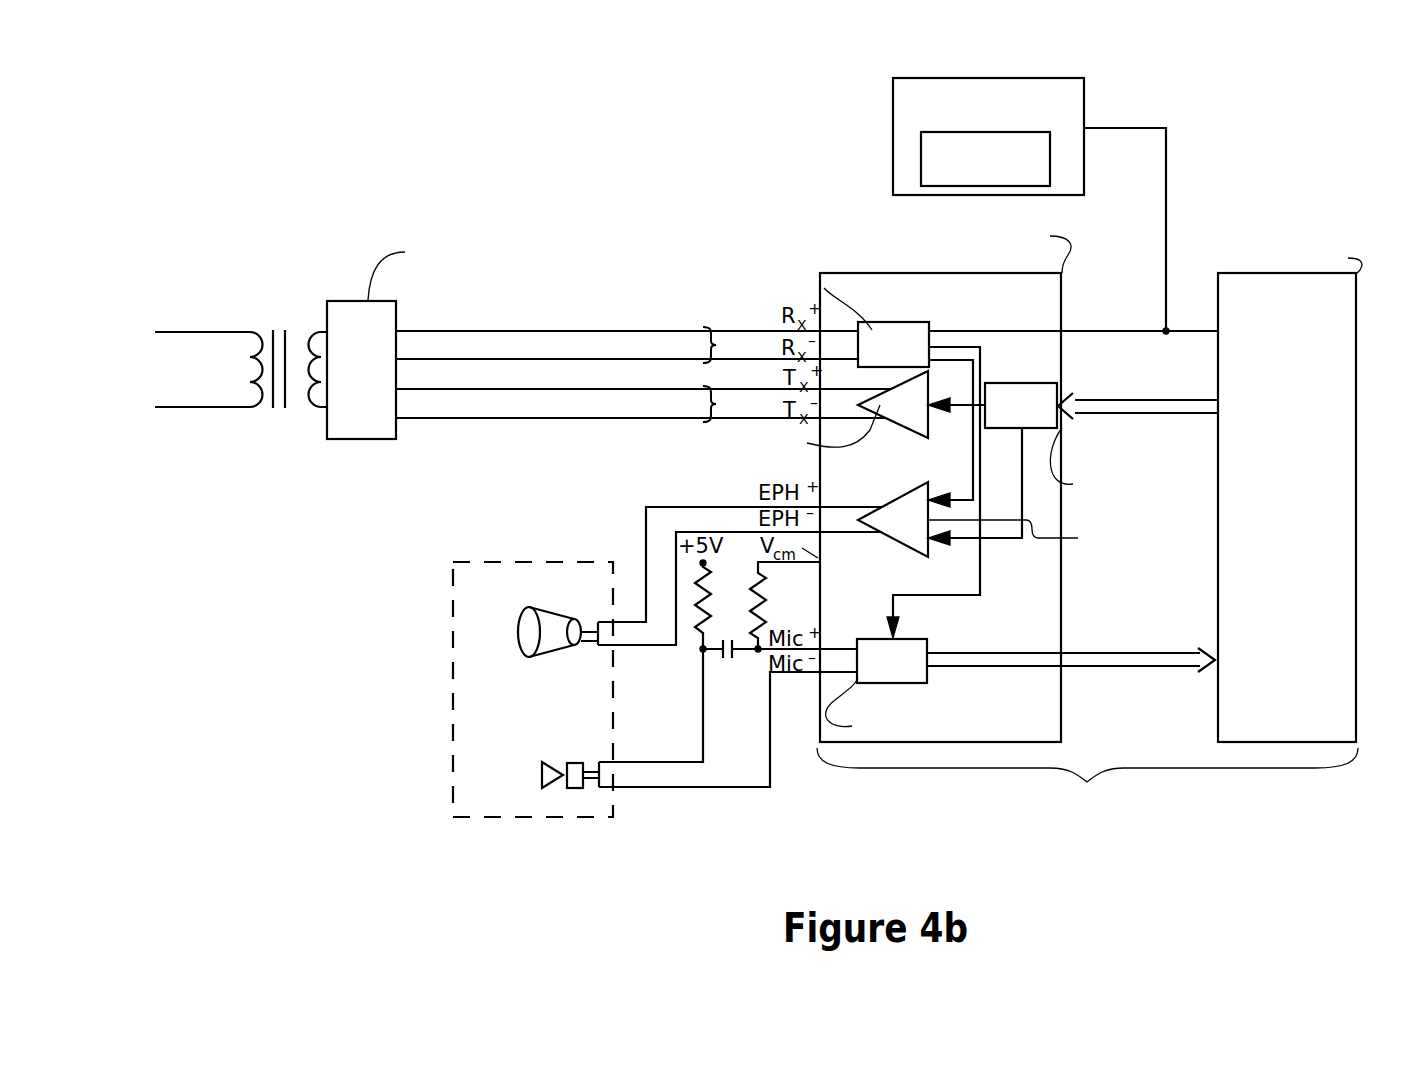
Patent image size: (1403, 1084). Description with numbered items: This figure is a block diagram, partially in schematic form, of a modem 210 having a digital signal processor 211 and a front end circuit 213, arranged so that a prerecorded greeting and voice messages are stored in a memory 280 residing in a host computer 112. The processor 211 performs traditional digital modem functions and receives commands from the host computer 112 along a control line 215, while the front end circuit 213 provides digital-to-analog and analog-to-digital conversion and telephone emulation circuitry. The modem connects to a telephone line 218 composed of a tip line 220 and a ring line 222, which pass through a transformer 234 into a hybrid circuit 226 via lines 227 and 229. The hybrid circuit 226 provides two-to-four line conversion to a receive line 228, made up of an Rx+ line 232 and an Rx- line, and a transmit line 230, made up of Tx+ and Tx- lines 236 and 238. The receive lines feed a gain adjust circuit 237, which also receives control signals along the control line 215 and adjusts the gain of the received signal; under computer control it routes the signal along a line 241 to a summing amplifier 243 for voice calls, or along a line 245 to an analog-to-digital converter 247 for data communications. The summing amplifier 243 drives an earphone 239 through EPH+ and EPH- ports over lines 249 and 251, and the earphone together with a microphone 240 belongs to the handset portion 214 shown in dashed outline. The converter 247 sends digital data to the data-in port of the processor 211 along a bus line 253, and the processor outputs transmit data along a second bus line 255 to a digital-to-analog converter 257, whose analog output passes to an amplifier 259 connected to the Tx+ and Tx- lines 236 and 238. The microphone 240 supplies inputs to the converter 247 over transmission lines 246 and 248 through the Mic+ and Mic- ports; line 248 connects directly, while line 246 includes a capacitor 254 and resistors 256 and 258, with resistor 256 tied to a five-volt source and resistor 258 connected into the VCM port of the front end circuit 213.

The telephone line 218 is at (197, 278).
The tip line 220 is at (204, 331).
The ring line 222 is at (192, 408).
The hybrid circuit 226 is at (378, 301).
The line 227 is at (313, 330).
The line 229 is at (323, 408).
The transformer 234 is at (275, 397).
The Rx+ line 232 is at (603, 330).
The Tx+ line 236 is at (487, 389).
The Tx- line 238 is at (443, 418).
The receive line 228 is at (735, 345).
The transmit line 230 is at (735, 404).
The host computer 112 is at (892, 133).
The memory 280 is at (985, 159).
The control line 215 is at (1167, 220).
The front end circuit 213 is at (1057, 733).
The digital signal processor 211 is at (1355, 733).
The modem 210 is at (1087, 780).
The gain adjust circuit 237 is at (883, 330).
The line 241 is at (978, 382).
The amplifier 259 is at (905, 422).
The summing amplifier 243 is at (913, 487).
The line 245 is at (982, 595).
The digital-to-analog converter 257 is at (997, 393).
The second bus line 255 is at (1110, 409).
The bus line 253 is at (1110, 665).
The analog-to-digital converter 247 is at (910, 670).
The line 249 is at (680, 507).
The line 251 is at (827, 535).
The handset 214 is at (478, 562).
The earphone 239 is at (537, 607).
The microphone 240 is at (540, 772).
The resistor 256 is at (712, 600).
The resistor 258 is at (768, 618).
The capacitor 254 is at (728, 667).
The transmission line 246 is at (625, 761).
The transmission line 248 is at (708, 786).